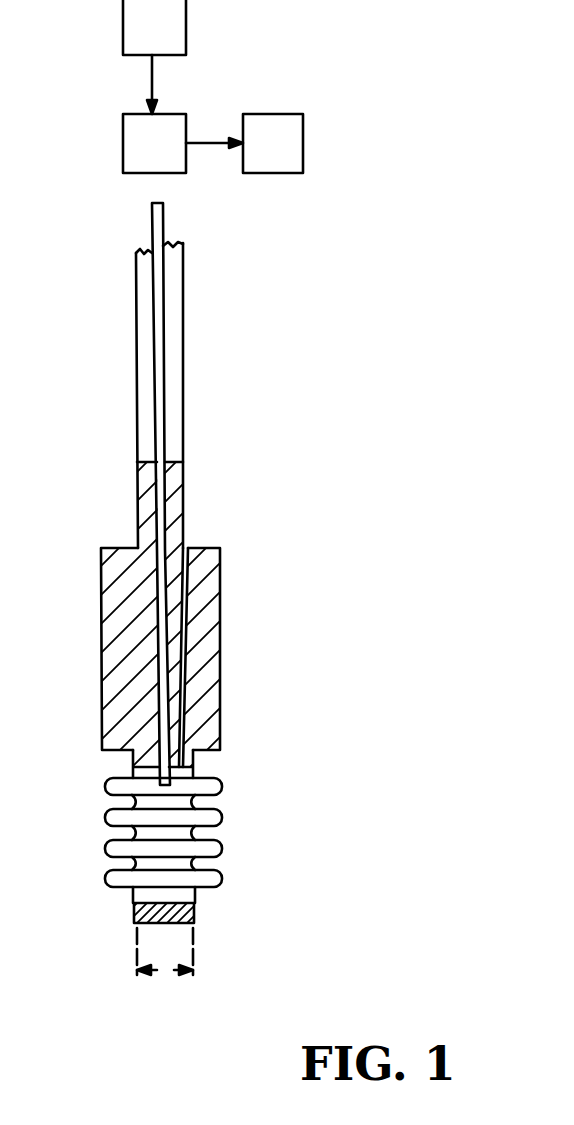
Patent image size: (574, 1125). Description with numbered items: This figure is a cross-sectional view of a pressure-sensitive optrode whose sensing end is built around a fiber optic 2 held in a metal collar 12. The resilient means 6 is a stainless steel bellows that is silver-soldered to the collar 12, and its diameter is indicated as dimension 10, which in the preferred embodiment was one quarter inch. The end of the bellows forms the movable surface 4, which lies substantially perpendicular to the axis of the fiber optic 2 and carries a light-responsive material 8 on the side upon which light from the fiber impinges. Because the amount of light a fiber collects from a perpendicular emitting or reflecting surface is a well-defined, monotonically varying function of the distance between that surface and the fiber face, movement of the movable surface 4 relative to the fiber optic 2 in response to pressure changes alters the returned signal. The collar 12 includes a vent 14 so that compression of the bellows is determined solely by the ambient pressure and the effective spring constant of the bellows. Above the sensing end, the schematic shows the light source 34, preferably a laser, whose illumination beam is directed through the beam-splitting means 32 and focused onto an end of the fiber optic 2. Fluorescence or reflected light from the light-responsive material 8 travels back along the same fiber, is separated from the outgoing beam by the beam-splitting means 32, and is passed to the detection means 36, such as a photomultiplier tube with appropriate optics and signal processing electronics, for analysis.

The fiber optic 2 is at (164, 222).
The movable surface 4 is at (96, 965).
The resilient means 6 is at (222, 815).
The light-responsive material 8 is at (195, 915).
The dimension 10 is at (164, 970).
The metal collar 12 is at (222, 624).
The vent 14 is at (188, 548).
The beam-splitting means 32 is at (170, 156).
The light source 34 is at (172, 33).
The detection means 36 is at (289, 156).